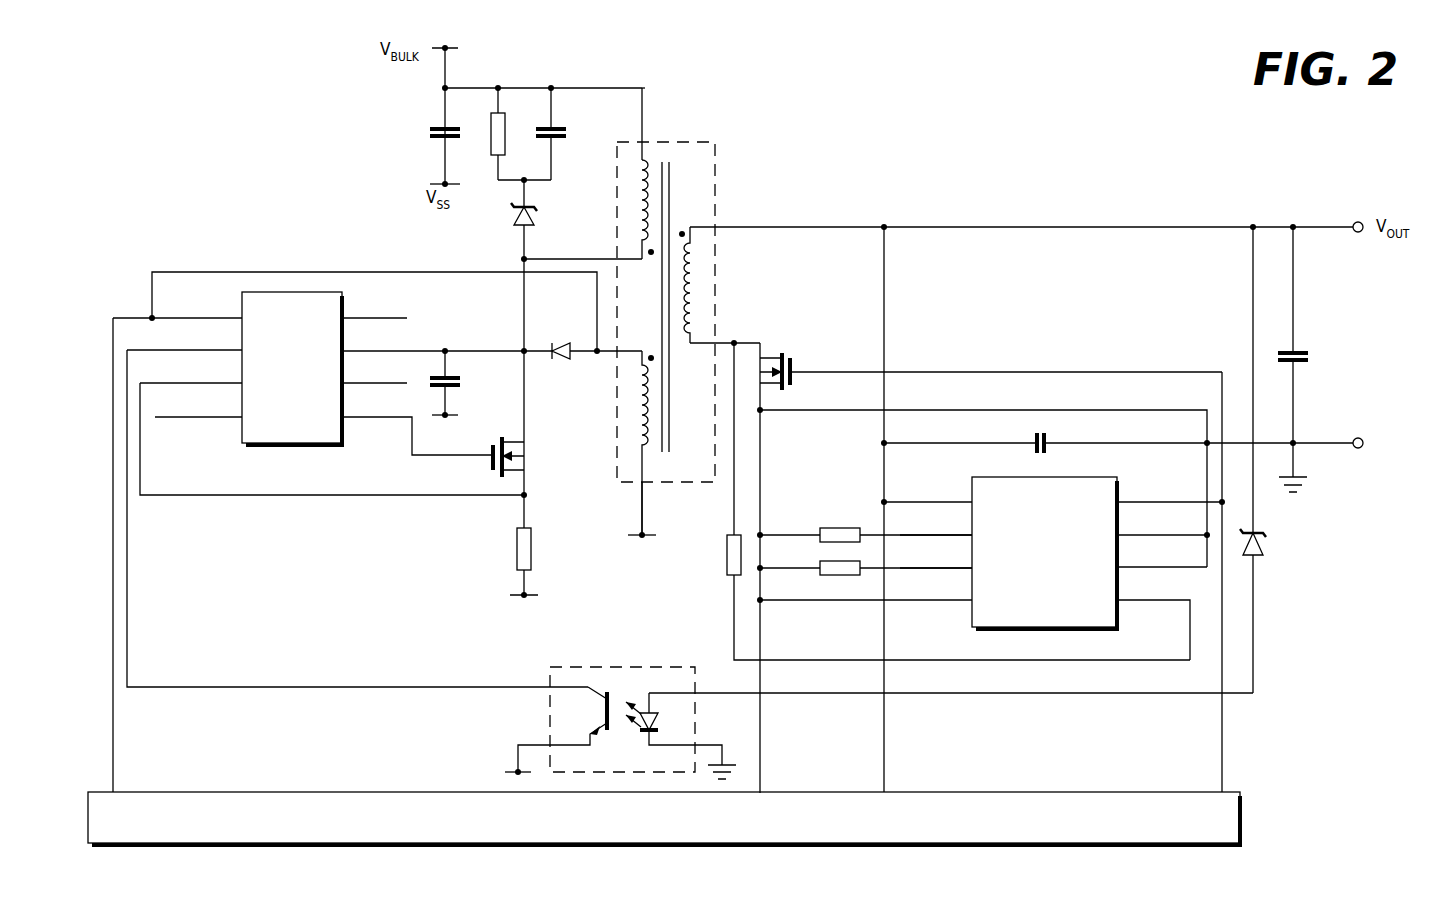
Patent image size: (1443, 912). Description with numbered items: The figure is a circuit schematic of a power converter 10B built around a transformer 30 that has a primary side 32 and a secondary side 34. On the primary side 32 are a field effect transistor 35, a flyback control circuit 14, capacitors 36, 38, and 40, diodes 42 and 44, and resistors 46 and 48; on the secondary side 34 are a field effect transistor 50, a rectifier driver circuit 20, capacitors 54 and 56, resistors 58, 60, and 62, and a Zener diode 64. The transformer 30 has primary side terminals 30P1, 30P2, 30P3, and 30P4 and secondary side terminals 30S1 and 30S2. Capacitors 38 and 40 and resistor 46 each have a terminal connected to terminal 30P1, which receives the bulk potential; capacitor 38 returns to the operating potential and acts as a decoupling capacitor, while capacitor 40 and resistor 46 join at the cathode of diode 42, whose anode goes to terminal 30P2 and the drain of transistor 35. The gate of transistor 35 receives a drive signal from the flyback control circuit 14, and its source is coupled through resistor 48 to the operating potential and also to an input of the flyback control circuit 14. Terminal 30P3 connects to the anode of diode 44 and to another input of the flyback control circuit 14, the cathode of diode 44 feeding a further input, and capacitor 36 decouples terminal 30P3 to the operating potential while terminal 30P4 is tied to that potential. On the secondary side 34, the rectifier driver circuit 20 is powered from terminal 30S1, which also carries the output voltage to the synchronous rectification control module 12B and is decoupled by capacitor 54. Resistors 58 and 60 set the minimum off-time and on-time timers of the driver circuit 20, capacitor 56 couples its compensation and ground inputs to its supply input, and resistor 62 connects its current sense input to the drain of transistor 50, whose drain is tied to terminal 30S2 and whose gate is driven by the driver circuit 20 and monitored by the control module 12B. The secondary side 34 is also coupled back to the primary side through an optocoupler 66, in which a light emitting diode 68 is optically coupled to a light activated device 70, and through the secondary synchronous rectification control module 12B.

The power converter 10B is at (1228, 128).
The secondary synchronous rectification control module 12B is at (436, 791).
The flyback control circuit 14 is at (268, 446).
The rectifier driver circuit 20 is at (1091, 477).
The transformer 30 is at (683, 142).
The primary side terminal 30P1 is at (630, 88).
The primary side terminal 30P2 is at (604, 259).
The primary side terminal 30P3 is at (616, 352).
The primary side terminal 30P4 is at (640, 507).
The secondary side terminal 30S1 is at (726, 226).
The secondary side terminal 30S2 is at (726, 342).
The primary side 32 is at (382, 166).
The secondary side 34 is at (808, 186).
The field effect transistor 35 is at (516, 450).
The energy storage element 36 is at (464, 384).
The energy storage element 38 is at (430, 130).
The energy storage element 40 is at (561, 130).
The diode 42 is at (514, 212).
The diode 44 is at (558, 341).
The impedance element 46 is at (507, 130).
The impedance element 48 is at (515, 553).
The field effect transistor 50 is at (795, 358).
The energy storage element 54 is at (1299, 351).
The energy storage element 56 is at (1034, 442).
The impedance element 58 is at (828, 528).
The impedance element 60 is at (816, 576).
The impedance element 62 is at (726, 576).
The Zener diode 64 is at (1264, 539).
The optocoupler 66 is at (602, 711).
The light emitting diode 68 is at (642, 738).
The light activated device 70 is at (608, 696).